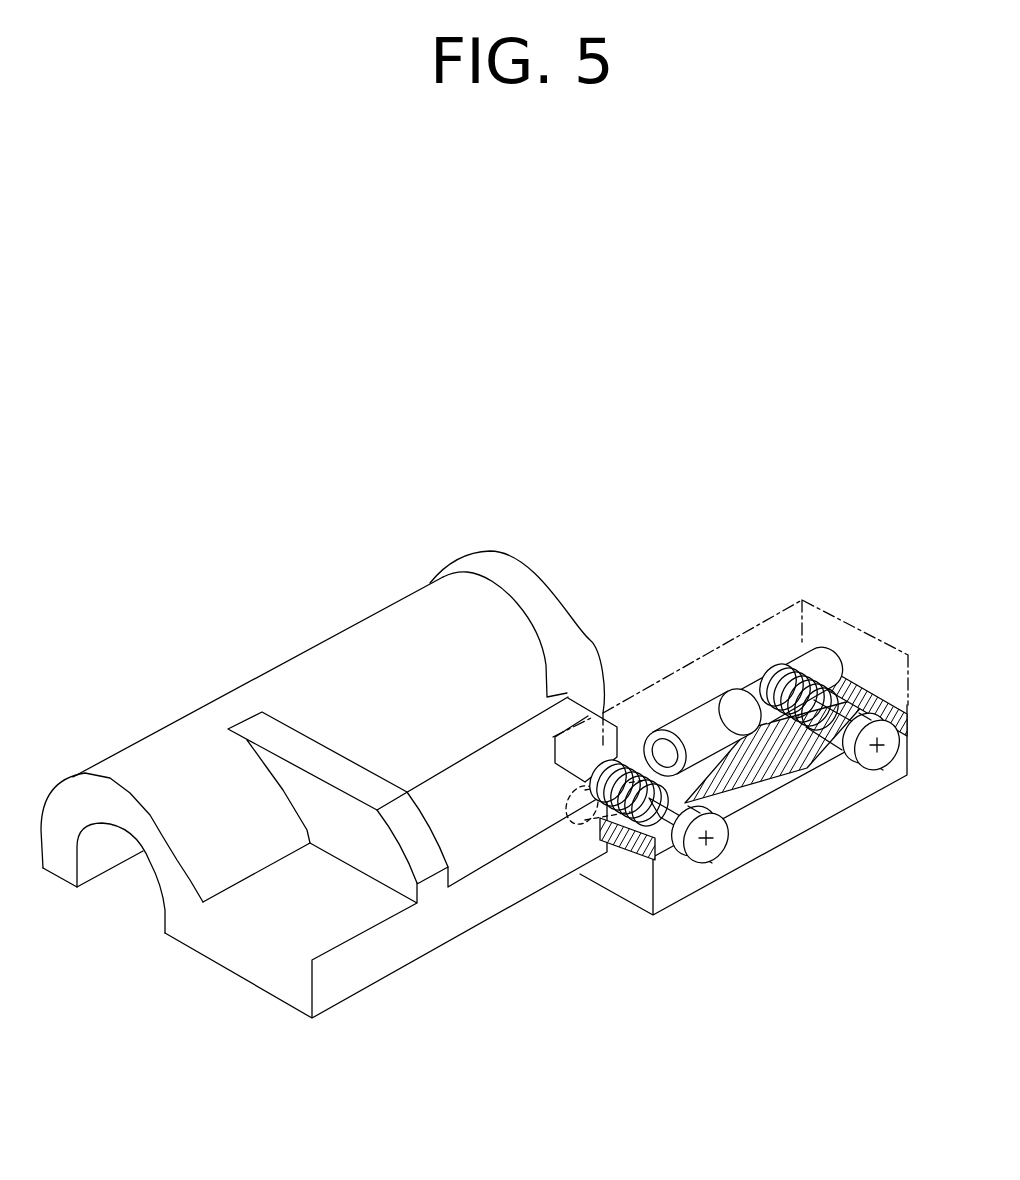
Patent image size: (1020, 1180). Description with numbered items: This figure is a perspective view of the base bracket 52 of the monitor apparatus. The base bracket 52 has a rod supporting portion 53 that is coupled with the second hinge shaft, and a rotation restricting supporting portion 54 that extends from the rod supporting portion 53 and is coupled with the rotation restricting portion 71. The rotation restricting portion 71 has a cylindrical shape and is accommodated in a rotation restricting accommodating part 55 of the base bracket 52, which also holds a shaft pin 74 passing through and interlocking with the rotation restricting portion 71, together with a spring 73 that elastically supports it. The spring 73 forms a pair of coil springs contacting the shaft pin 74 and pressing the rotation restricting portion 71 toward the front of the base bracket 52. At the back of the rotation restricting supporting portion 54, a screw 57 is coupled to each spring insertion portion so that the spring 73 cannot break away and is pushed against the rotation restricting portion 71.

The base bracket 52 is at (232, 600).
The rod supporting portion 53 is at (375, 612).
The rotation restricting supporting portion 54 is at (635, 694).
The rotation restricting accommodating part 55 is at (762, 645).
The screw 57 is at (707, 866).
The rotation restricting portion 71 is at (697, 713).
The spring 73 is at (633, 848).
The shaft pin 74 is at (818, 655).